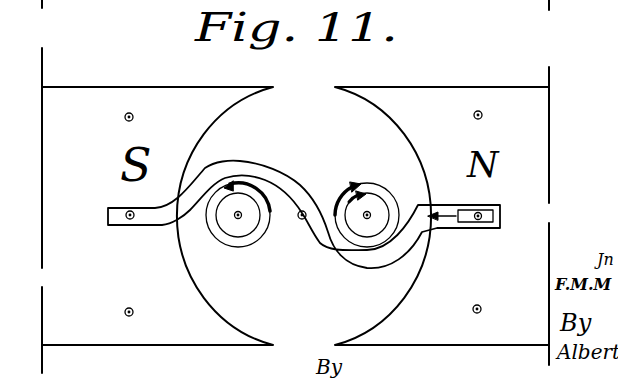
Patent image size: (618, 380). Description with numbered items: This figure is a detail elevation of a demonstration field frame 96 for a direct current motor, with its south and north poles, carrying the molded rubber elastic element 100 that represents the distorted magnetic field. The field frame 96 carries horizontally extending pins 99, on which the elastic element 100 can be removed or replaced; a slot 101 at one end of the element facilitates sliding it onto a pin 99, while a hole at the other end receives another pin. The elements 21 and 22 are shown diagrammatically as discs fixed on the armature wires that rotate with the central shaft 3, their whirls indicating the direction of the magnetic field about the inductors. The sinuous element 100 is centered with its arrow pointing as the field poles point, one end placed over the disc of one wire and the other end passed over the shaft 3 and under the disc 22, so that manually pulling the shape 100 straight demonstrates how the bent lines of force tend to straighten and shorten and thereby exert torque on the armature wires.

The magnet plate 96 is at (533, 143).
The pins 99 is at (134, 117).
The elastic element 100 is at (163, 222).
The element 21 is at (235, 230).
The disc 22 is at (372, 205).
The central shaft 3 is at (299, 220).
The slot 101 is at (488, 222).